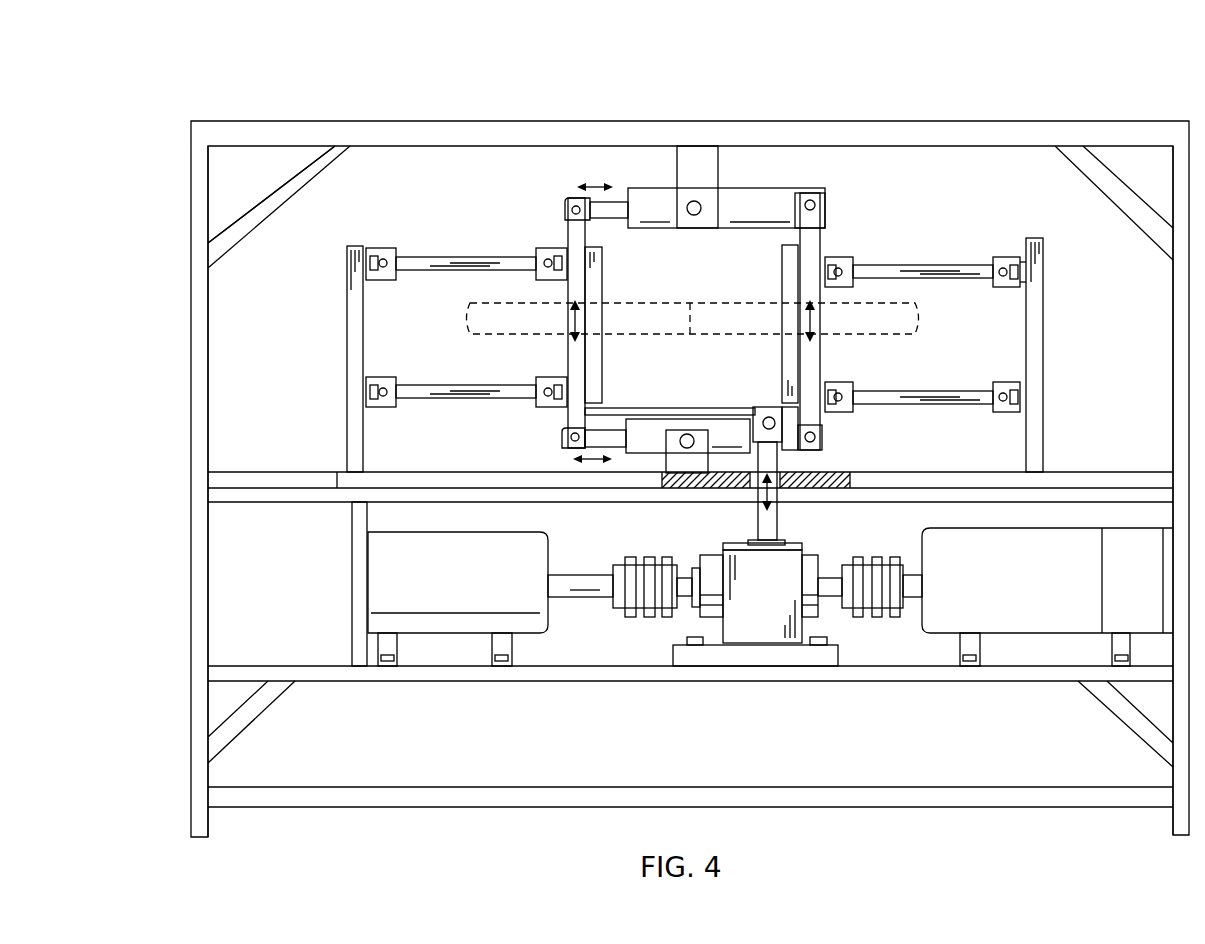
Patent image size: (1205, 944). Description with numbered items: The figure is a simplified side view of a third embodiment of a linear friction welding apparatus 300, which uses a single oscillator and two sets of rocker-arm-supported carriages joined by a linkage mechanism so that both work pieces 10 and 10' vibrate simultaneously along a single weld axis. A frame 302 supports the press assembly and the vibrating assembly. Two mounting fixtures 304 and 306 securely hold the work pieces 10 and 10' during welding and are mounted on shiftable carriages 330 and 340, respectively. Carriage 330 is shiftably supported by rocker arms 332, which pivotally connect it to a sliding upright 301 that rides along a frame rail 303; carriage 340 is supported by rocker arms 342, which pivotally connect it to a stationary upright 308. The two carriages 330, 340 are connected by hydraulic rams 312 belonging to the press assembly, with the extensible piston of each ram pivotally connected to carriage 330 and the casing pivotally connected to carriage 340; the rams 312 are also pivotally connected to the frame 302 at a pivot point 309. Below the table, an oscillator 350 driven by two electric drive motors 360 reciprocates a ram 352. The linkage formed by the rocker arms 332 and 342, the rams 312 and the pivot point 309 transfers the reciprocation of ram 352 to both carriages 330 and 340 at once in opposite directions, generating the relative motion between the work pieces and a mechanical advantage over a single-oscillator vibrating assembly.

The linear friction welding apparatus 300 is at (1040, 70).
The sliding upright 301 is at (352, 363).
The frame 302 is at (202, 308).
The frame rail 303 is at (420, 478).
The mounting fixture 304 is at (595, 283).
The mounting fixture 306 is at (787, 337).
The stationary upright 308 is at (1038, 355).
The pivot point 309 is at (697, 203).
The hydraulic rams 312 is at (733, 192).
The shiftable carriage 330 is at (560, 210).
The rocker arms 332 is at (408, 260).
The shiftable carriage 340 is at (817, 230).
The rocker arms 342 is at (890, 265).
The oscillator 350 is at (740, 633).
The ram 352 is at (773, 517).
The electric drive motors 360 is at (440, 623).
The work piece 10 is at (693, 302).
The work piece 10' is at (723, 300).